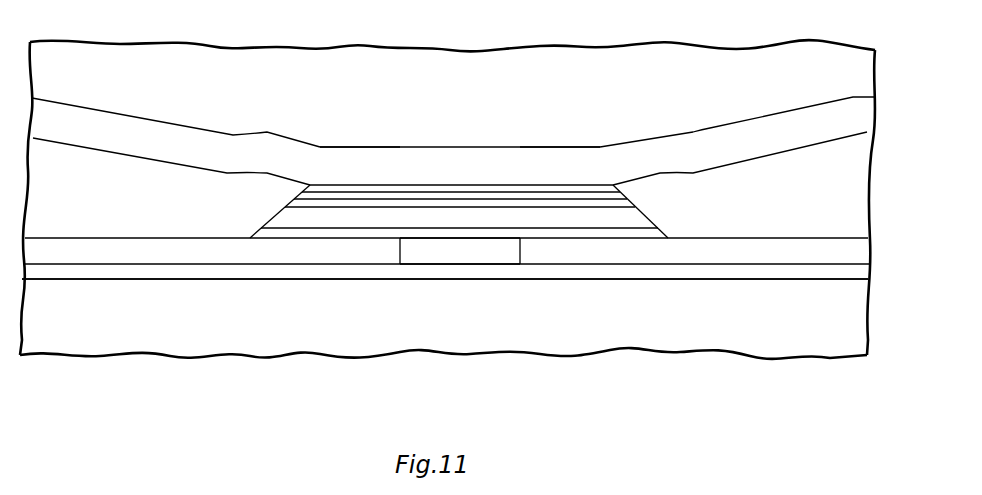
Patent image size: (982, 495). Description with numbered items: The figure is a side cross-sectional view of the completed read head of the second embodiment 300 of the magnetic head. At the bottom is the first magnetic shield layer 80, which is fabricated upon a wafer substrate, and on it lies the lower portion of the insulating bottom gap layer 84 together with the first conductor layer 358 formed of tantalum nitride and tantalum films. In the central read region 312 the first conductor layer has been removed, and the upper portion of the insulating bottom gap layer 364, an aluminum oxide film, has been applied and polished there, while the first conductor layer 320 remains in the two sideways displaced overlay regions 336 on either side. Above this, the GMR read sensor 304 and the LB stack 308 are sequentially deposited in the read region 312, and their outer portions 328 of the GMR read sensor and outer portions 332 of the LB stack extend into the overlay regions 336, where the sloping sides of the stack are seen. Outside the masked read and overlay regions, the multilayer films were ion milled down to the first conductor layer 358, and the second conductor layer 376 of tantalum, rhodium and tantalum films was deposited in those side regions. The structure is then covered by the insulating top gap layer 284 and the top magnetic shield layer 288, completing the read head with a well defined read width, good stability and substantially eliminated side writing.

The second embodiment 300 is at (730, 410).
The top magnetic shield layer 288 is at (740, 104).
The insulating top gap layer 284 is at (47, 122).
The second conductor layer 376 is at (40, 203).
The read region 312 is at (462, 142).
The overlay regions 336 is at (358, 142).
The outer portions of the LB stack 332 is at (358, 193).
The LB stack 308 is at (453, 193).
The GMR read sensor 304 is at (462, 213).
The outer portions of the GMR read sensor 328 is at (297, 222).
The first conductor layer 320 is at (387, 250).
The upper portion of the insulating bottom gap layer 364 is at (460, 252).
The first conductor layer 358 is at (60, 255).
The insulating bottom gap layer 84 is at (250, 270).
The first magnetic shield layer 80 is at (738, 329).